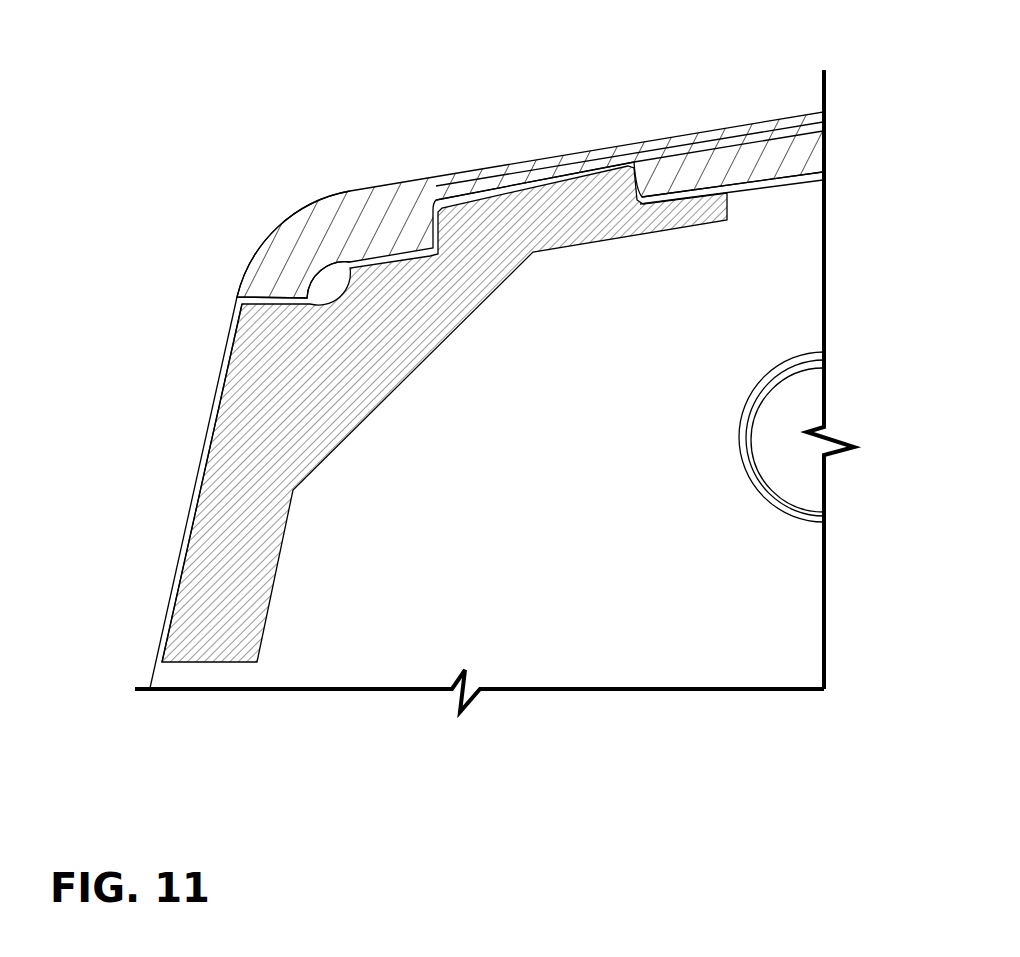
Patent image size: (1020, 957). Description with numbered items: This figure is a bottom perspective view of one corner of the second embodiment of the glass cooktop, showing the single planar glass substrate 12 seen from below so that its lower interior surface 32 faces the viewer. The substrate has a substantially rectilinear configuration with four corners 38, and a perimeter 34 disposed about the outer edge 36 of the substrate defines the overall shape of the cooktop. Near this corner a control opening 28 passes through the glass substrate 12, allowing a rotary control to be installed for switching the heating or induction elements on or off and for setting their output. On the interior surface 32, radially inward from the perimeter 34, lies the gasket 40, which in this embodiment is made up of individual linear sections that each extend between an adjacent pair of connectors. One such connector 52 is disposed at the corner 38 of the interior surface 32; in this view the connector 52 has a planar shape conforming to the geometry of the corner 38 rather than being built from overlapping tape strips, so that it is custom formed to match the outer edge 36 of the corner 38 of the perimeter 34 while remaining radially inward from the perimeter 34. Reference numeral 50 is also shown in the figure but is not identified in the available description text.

The single planar glass substrate 12 is at (590, 640).
The control opening 28 is at (762, 477).
The interior surface 32 is at (720, 640).
The perimeter 34 is at (505, 153).
The outer edge 36 is at (690, 127).
The corner 38 is at (290, 218).
The gasket 40 is at (753, 147).
The inclined wall 50 is at (207, 440).
The connector 52 is at (366, 345).